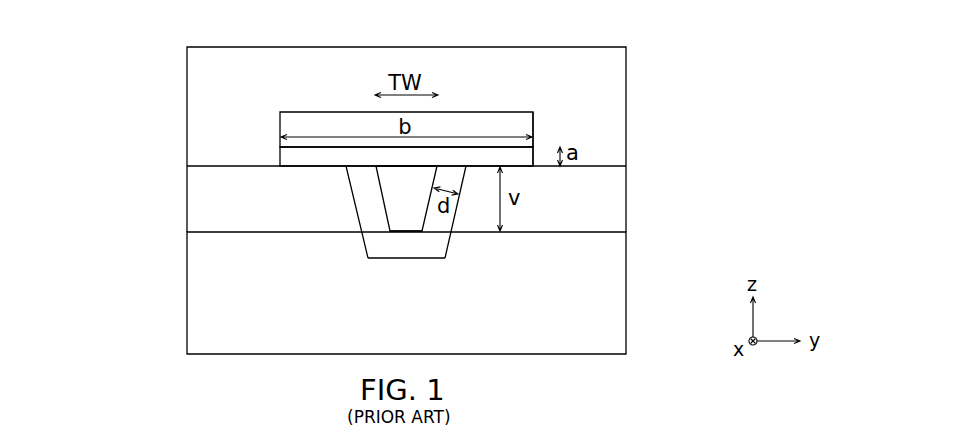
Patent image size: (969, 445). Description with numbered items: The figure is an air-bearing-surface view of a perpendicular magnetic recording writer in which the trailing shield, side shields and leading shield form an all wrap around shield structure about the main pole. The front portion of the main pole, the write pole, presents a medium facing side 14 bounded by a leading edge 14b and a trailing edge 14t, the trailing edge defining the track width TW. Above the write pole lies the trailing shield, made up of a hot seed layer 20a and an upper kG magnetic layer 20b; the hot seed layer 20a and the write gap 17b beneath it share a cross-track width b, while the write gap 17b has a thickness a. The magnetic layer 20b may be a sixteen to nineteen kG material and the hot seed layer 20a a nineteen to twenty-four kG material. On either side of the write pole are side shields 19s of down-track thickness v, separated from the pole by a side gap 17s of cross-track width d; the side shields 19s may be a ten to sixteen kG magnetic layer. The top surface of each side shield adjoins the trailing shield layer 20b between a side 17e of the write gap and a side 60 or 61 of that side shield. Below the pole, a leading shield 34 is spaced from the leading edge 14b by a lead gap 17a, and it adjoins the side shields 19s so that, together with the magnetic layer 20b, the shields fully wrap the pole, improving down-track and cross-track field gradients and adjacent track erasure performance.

The medium facing side 14 is at (423, 173).
The trailing edge 14t is at (392, 168).
The leading edge 14b is at (405, 233).
The lead gap 17a is at (380, 248).
The write gap 17b is at (288, 157).
The side of the write gap 17e is at (543, 148).
The side gap 17s is at (368, 207).
The side shields 19s is at (202, 182).
The hot seed layer 20a is at (288, 123).
The upper magnetic layer 20b is at (582, 60).
The leading shield 34 is at (570, 345).
The side of the side shield 60 is at (188, 203).
The side of the side shield 61 is at (627, 178).